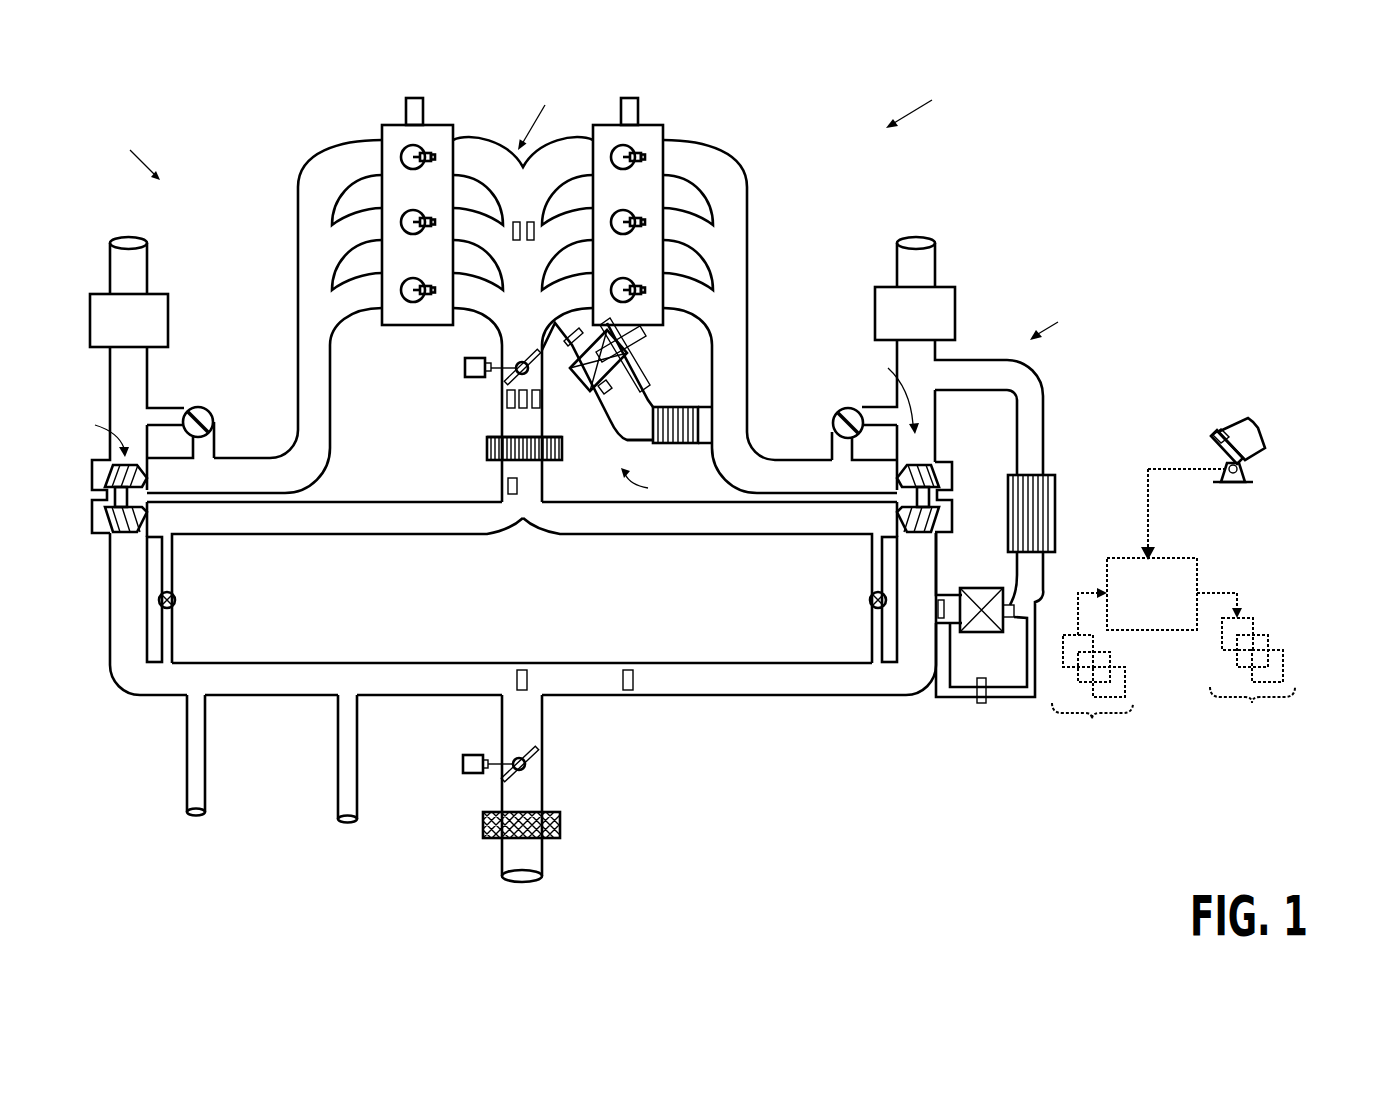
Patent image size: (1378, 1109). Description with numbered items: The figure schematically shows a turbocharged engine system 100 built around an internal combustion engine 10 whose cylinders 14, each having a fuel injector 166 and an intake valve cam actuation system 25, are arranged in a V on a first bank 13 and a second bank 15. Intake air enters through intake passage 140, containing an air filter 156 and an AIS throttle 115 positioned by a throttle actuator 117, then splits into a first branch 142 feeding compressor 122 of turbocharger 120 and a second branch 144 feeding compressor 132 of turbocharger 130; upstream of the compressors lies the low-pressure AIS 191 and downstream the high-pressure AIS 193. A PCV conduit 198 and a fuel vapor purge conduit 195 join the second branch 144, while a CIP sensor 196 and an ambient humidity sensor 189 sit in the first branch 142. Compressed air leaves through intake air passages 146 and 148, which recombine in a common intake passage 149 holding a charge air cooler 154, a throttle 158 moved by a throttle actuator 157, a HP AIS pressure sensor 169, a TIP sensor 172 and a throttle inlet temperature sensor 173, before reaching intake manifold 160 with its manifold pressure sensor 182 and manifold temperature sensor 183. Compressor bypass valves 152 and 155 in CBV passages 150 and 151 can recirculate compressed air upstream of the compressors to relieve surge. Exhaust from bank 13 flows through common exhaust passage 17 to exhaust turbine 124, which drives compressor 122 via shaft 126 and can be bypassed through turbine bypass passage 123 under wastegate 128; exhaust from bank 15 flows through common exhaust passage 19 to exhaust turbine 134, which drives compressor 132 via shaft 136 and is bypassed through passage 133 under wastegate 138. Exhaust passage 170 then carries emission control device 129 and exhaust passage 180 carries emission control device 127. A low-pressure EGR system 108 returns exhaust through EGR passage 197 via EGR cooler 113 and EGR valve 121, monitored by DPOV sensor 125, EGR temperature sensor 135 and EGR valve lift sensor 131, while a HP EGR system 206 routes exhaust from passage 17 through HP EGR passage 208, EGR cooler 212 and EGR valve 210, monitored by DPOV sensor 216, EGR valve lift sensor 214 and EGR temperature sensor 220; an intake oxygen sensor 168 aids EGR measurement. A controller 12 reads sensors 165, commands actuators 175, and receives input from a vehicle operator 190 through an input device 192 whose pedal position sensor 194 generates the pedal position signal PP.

The internal combustion engine 10 is at (925, 106).
The controller 12 is at (1152, 594).
The first bank 13 is at (701, 212).
The cylinder 14 is at (622, 212).
The second bank 15 is at (386, 126).
The common exhaust passage 17 is at (748, 385).
The common exhaust passage 19 is at (298, 380).
The intake valve cam actuation system 25 is at (419, 99).
The turbocharged engine system 100 is at (128, 151).
The low-pressure EGR system 108 is at (1063, 323).
The EGR cooler 113 is at (1056, 508).
The AIS throttle 115 is at (519, 757).
The throttle actuator 117 is at (465, 756).
The turbocharger 120 is at (931, 450).
The EGR valve 121 is at (982, 634).
The compressor 122 is at (945, 535).
The turbine bypass passage 123 is at (878, 407).
The exhaust turbine 124 is at (948, 468).
The DPOV sensor 125 is at (984, 704).
The shaft 126 is at (948, 516).
The emission control device 127 is at (129, 320).
The wastegate 128 is at (836, 414).
The emission control device 129 is at (915, 313).
The turbocharger 130 is at (118, 521).
The EGR valve lift sensor 131 is at (1016, 604).
The compressor 132 is at (108, 538).
The turbine bypass passage 133 is at (168, 408).
The exhaust turbine 134 is at (105, 462).
The EGR temperature sensor 135 is at (946, 600).
The shaft 136 is at (108, 515).
The wastegate 138 is at (210, 414).
The intake passage 140 is at (542, 864).
The first branch of the intake passage 142 is at (706, 662).
The second branch of the intake passage 144 is at (282, 662).
The intake air passage 146 is at (698, 535).
The intake air passage 148 is at (250, 535).
The common intake passage 149 is at (506, 394).
The CBV passage 150 is at (172, 565).
The CBV passage 151 is at (880, 624).
The compressor bypass valve 152 is at (176, 600).
The charge air cooler 154 is at (560, 460).
The compressor bypass valve 155 is at (870, 598).
The air filter 156 is at (561, 822).
The throttle actuator 157 is at (466, 358).
The throttle 158 is at (518, 360).
The intake manifold 160 is at (581, 288).
The sensors 165 is at (1092, 666).
The fuel injector 166 is at (645, 220).
The intake oxygen sensor 168 is at (520, 400).
The HP AIS pressure sensor 169 is at (506, 487).
The exhaust passage 170 is at (897, 282).
The throttle inlet pressure sensor 172 is at (487, 446).
The throttle inlet temperature sensor 173 is at (538, 406).
The actuators 175 is at (1246, 659).
The exhaust passage 180 is at (148, 290).
The intake manifold pressure sensor 182 is at (515, 240).
The intake manifold temperature sensor 183 is at (533, 240).
The ambient humidity sensor 189 is at (624, 670).
The vehicle operator 190 is at (1263, 434).
The low-pressure AIS system 191 is at (570, 614).
The input device 192 is at (1213, 447).
The high-pressure AIS system 193 is at (522, 519).
The pedal position sensor 194 is at (1243, 470).
The fuel vapor purge conduit 195 is at (206, 772).
The compressor inlet pressure sensor 196 is at (518, 670).
The EGR passage 197 is at (1044, 406).
The PCV conduit 198 is at (358, 772).
The HP EGR system 206 is at (622, 393).
The HP EGR passage 208 is at (630, 444).
The EGR valve 210 is at (590, 380).
The EGR cooler 212 is at (668, 406).
The EGR valve lift sensor 214 is at (630, 378).
The DPOV sensor 216 is at (640, 350).
The EGR temperature sensor 220 is at (573, 333).
The pedal position signal PP is at (1184, 514).